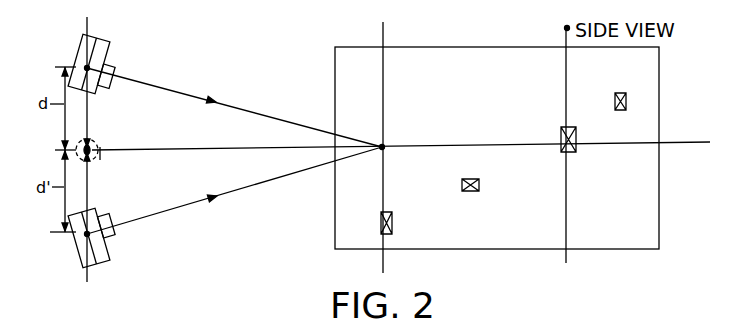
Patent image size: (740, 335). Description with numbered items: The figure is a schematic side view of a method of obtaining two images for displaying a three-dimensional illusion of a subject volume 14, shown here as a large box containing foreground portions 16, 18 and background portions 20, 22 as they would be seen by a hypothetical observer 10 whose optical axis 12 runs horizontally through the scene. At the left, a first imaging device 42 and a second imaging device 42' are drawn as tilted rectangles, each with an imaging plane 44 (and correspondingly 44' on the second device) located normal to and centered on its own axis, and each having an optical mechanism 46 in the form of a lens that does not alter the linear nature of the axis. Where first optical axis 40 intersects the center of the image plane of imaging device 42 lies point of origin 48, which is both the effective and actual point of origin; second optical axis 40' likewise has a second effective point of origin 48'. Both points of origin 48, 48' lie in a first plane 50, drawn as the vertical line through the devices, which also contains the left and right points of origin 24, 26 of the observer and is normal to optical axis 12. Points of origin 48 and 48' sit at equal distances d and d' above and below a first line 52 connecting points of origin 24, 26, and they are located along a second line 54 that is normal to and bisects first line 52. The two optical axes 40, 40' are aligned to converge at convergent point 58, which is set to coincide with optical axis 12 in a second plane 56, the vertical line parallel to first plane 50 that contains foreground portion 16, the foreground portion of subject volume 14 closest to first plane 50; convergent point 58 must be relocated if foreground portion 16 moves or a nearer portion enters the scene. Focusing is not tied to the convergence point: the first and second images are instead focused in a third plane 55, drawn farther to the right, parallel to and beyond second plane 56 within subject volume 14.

The observer 10 is at (97, 140).
The optical axis 12 is at (199, 149).
The subject volume 14 is at (411, 47).
The foreground portion 16 is at (393, 221).
The foreground portion 18 is at (480, 184).
The background portion 20 is at (572, 152).
The background portion 22 is at (621, 92).
The left point of origin 24 is at (126, 160).
The right point of origin 26 is at (97, 156).
The first optical axis 40 is at (234, 105).
The second optical axis 40' is at (234, 190).
The imaging device 42 is at (98, 51).
The second imaging device 42' is at (98, 245).
The imaging plane 44 is at (114, 63).
The mirror 44' is at (110, 228).
The optical mechanism 46 is at (109, 77).
The point of origin 48 is at (58, 52).
The second effective point of origin 48' is at (56, 243).
The first plane 50 is at (87, 105).
The first line 52 is at (98, 150).
The second line 54 is at (92, 184).
The third plane 55 is at (565, 79).
The second plane 56 is at (421, 104).
The convergent point 58 is at (384, 146).